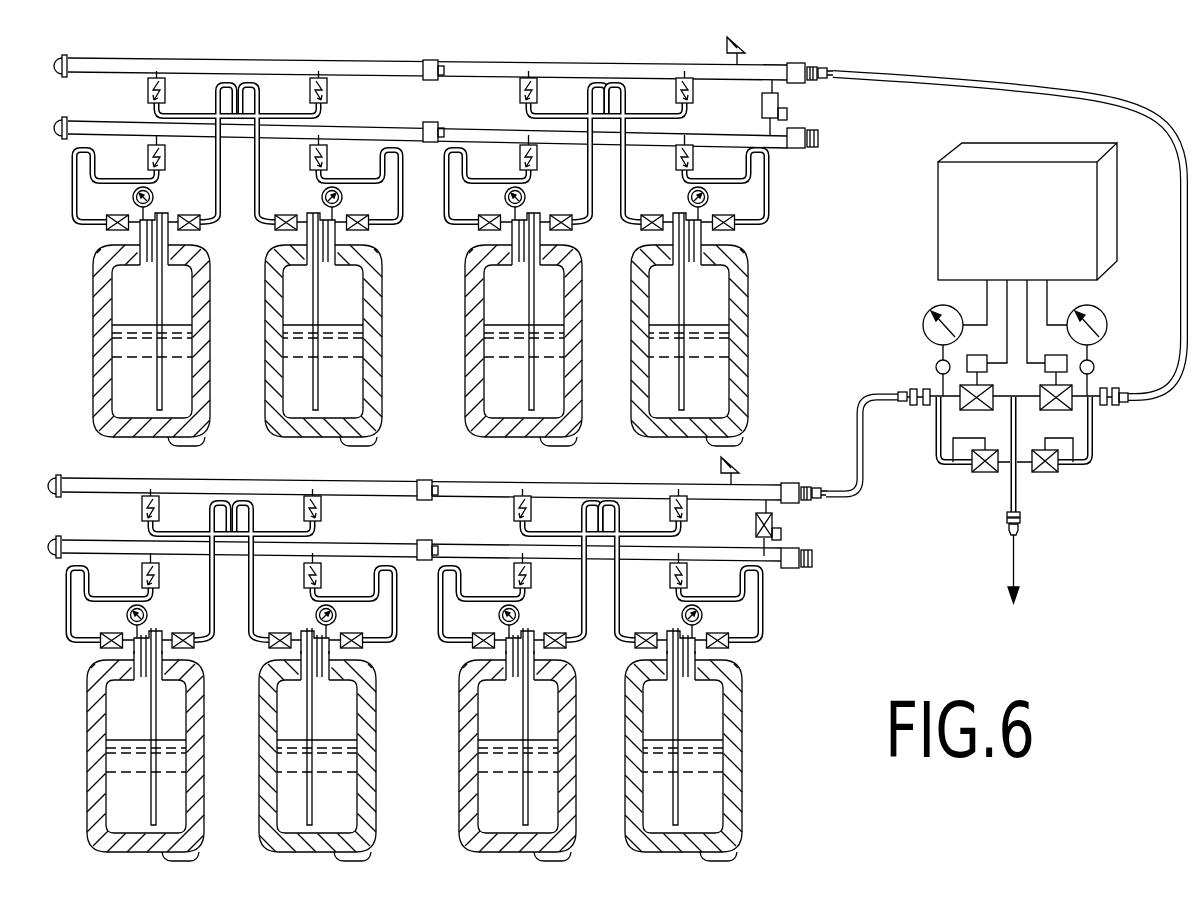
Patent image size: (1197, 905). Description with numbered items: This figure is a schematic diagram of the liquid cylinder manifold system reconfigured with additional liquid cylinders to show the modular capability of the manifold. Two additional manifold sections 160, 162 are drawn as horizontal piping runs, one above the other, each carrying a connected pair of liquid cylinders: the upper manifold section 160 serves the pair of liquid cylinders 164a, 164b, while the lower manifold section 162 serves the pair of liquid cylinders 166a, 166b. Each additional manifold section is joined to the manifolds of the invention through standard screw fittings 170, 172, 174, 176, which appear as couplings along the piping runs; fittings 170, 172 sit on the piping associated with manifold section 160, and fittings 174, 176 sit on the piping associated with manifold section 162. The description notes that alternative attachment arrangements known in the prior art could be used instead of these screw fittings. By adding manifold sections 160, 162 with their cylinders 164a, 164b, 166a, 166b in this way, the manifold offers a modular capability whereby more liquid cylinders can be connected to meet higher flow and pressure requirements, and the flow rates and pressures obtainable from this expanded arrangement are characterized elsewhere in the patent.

The manifold section 160 is at (321, 60).
The manifold section 162 is at (328, 480).
The liquid cylinder 164a is at (201, 440).
The liquid cylinder 164b is at (374, 440).
The liquid cylinder 166a is at (194, 850).
The liquid cylinder 166b is at (368, 850).
The screw fitting 170 is at (440, 62).
The screw fitting 172 is at (440, 122).
The screw fitting 174 is at (434, 482).
The screw fitting 176 is at (434, 540).